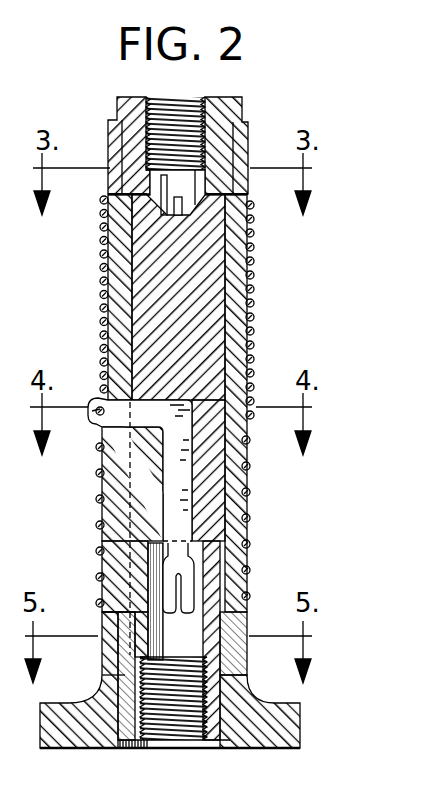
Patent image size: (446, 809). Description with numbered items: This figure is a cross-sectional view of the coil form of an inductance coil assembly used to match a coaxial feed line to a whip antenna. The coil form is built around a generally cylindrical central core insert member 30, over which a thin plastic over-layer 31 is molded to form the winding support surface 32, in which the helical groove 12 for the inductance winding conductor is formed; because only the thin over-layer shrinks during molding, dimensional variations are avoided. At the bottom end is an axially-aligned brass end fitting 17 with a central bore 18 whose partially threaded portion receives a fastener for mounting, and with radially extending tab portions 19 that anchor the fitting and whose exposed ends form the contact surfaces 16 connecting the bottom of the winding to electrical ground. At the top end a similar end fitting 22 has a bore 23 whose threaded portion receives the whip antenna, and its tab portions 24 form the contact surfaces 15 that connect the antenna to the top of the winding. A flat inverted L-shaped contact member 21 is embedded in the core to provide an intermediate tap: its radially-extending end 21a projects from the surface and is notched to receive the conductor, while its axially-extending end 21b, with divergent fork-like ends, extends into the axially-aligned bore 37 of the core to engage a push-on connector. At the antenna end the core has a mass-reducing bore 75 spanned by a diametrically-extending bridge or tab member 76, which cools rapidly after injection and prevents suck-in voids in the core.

The helical groove 12 is at (102, 478).
The contact surfaces 15 is at (252, 182).
The contact surfaces 16 is at (247, 643).
The end fitting 17 is at (121, 654).
The central bore 18 is at (148, 706).
The tab portions 19 is at (100, 625).
The contact member 21 is at (172, 503).
The radially-extending end 21a is at (96, 400).
The axially-extending end 21b is at (188, 570).
The end fitting 22 is at (125, 152).
The bore 23 is at (150, 150).
The tab portions 24 is at (248, 152).
The core insert member 30 is at (207, 293).
The plastic over-layer 31 is at (233, 342).
The winding support surface 32 is at (250, 500).
The axially-aligned bore 37 is at (204, 570).
The mass-reducing bore 75 is at (160, 178).
The bridge or tab member 76 is at (180, 210).